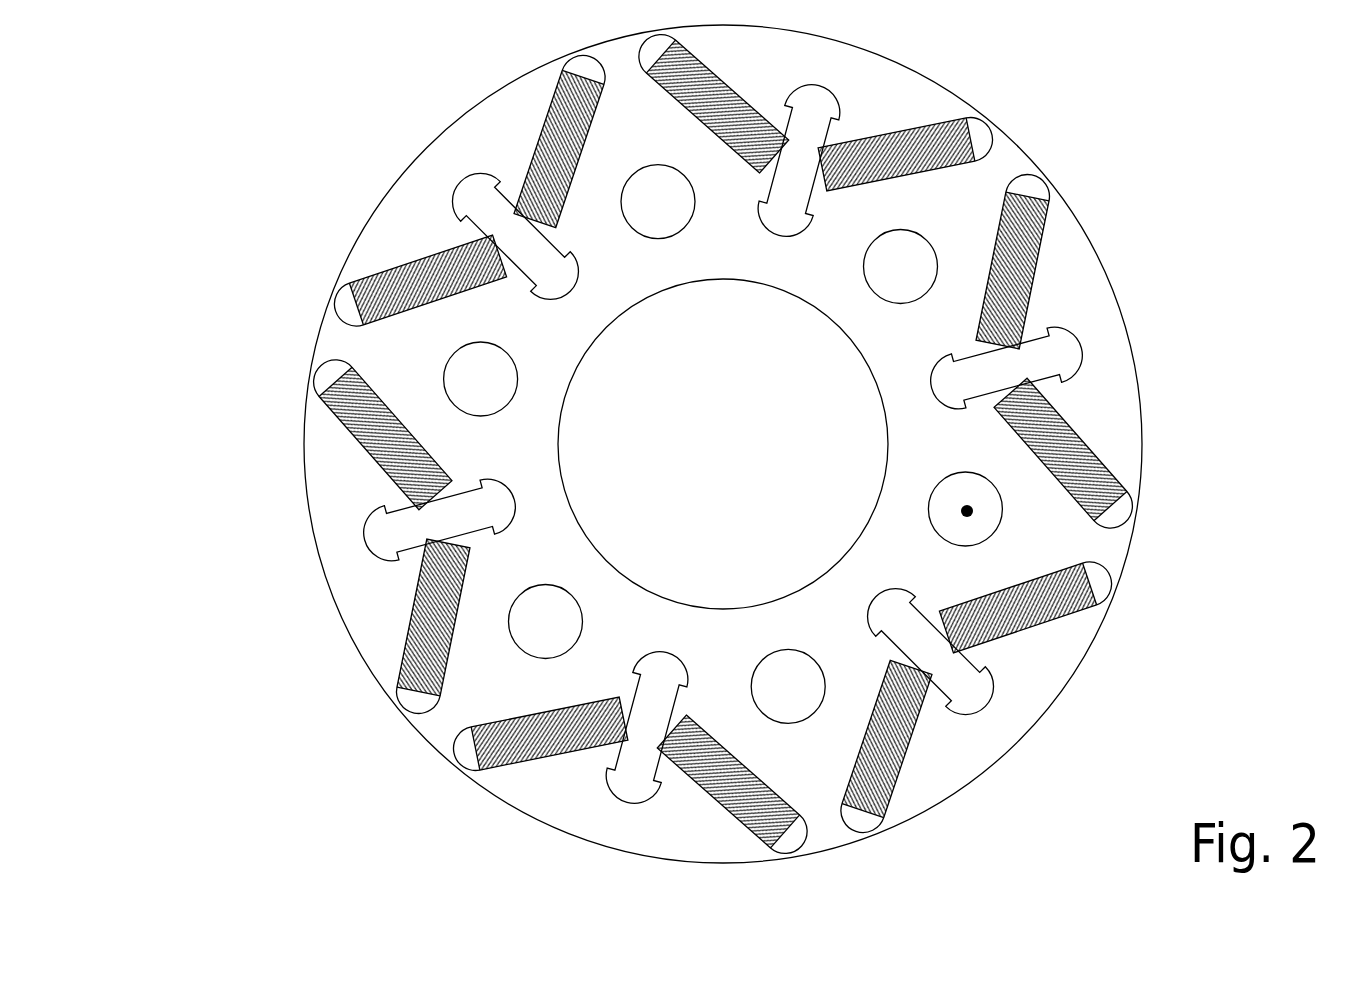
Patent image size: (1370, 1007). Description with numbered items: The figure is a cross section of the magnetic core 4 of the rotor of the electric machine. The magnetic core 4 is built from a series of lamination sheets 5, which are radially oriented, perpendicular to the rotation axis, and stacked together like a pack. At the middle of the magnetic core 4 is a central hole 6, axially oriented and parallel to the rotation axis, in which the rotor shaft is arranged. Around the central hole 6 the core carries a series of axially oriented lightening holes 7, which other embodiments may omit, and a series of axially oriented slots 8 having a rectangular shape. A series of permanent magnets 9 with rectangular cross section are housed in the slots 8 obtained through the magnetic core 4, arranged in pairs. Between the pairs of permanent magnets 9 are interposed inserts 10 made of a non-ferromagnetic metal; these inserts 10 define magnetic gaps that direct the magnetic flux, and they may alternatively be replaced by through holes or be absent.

The magnetic core 4 is at (673, 445).
The lamination sheets 5 is at (1108, 400).
The central hole 6 is at (617, 570).
The lightening holes 7 is at (973, 513).
The slots 8 is at (422, 302).
The permanent magnets 9 is at (377, 435).
The inserts 10 is at (957, 682).